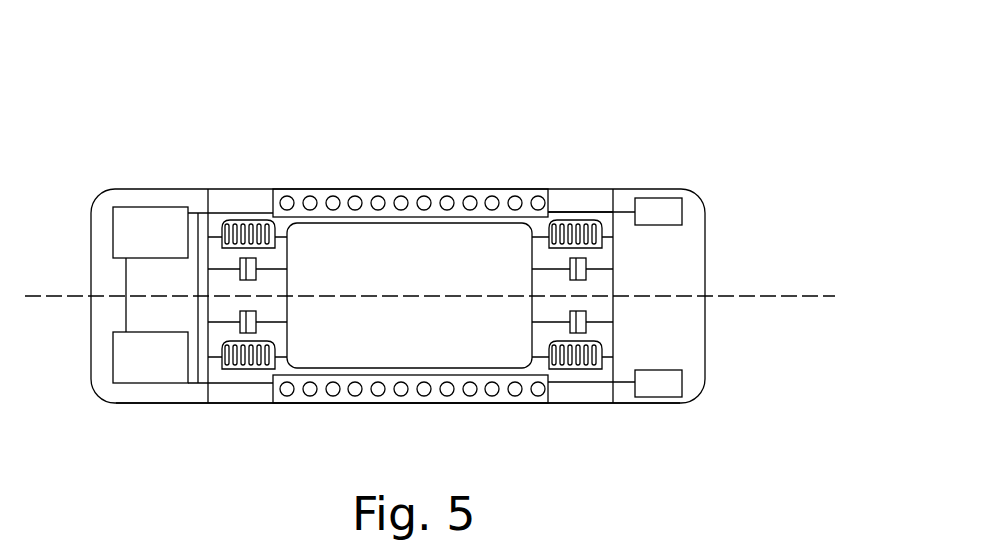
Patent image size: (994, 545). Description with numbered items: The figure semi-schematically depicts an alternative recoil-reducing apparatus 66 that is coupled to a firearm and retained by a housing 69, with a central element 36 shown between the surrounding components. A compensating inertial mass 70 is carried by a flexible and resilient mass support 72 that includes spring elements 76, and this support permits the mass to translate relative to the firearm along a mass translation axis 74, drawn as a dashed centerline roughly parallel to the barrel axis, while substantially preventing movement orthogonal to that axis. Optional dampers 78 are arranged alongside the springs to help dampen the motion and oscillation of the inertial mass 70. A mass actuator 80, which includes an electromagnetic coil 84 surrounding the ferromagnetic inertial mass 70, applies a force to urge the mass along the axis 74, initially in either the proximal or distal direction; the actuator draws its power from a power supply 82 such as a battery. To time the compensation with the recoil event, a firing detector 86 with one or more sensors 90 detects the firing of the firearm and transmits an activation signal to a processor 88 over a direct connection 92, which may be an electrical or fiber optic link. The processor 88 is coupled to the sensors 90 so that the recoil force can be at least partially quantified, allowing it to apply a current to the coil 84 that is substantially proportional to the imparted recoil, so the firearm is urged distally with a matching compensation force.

The battery cell 36 is at (428, 224).
The recoil-reducing apparatus 66 is at (290, 72).
The housing 69 is at (178, 403).
The compensating inertial mass 70 is at (320, 376).
The mass support 72 is at (256, 208).
The mass translation axis 74 is at (797, 294).
The spring elements 76 is at (237, 220).
The dampers 78 is at (240, 321).
The mass actuator 80 is at (388, 189).
The power supply 82 is at (152, 383).
The electromagnetic coil 84 is at (400, 189).
The firing detector 86 is at (667, 142).
The processor 88 is at (138, 206).
The sensors 90 is at (670, 199).
The direct connection 92 is at (607, 210).